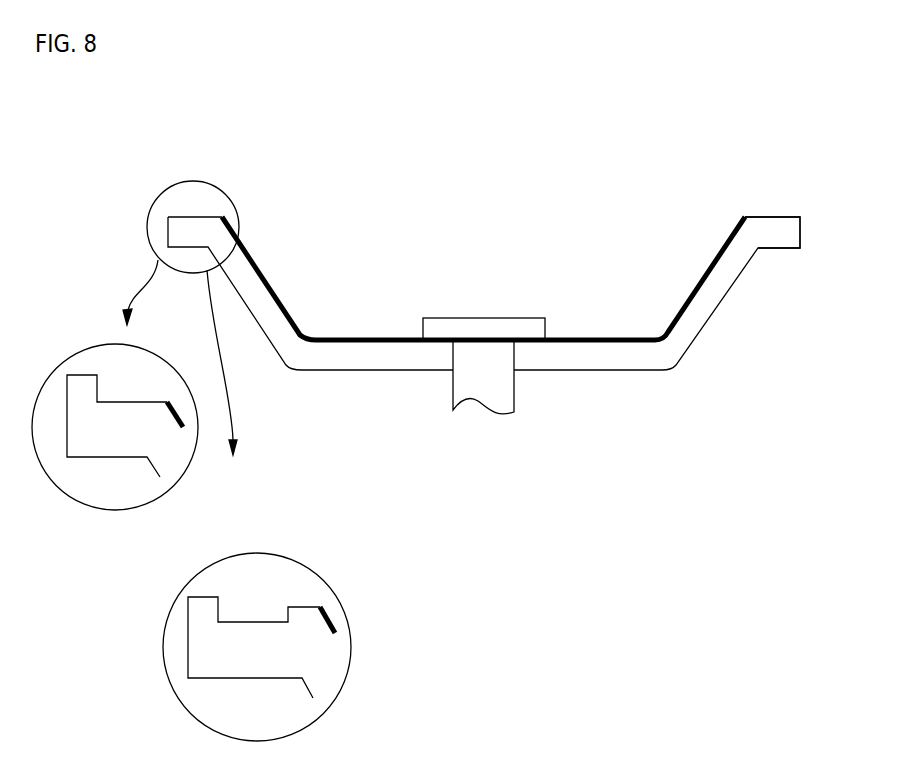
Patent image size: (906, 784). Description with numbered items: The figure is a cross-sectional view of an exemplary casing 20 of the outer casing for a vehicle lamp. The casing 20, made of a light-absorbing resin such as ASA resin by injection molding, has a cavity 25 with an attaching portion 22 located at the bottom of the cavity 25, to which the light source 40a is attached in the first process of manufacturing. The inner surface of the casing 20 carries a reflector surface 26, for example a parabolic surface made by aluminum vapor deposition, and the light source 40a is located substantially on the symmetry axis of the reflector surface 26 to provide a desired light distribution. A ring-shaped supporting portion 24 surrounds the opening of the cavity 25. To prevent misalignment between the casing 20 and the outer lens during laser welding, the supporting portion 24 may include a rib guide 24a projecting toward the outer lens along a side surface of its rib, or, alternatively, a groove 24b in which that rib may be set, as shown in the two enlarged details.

The casing 20 is at (343, 355).
The attaching portion 22 is at (453, 373).
The supporting portion 24 is at (783, 230).
The rib guide 24a is at (82, 383).
The groove 24b is at (247, 622).
The cavity 25 is at (417, 266).
The reflector surface 26 is at (717, 260).
The light source 40a is at (500, 328).